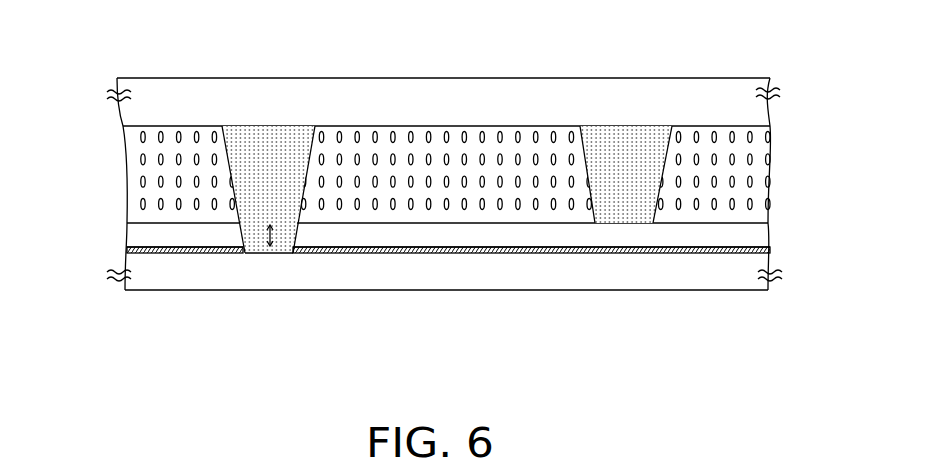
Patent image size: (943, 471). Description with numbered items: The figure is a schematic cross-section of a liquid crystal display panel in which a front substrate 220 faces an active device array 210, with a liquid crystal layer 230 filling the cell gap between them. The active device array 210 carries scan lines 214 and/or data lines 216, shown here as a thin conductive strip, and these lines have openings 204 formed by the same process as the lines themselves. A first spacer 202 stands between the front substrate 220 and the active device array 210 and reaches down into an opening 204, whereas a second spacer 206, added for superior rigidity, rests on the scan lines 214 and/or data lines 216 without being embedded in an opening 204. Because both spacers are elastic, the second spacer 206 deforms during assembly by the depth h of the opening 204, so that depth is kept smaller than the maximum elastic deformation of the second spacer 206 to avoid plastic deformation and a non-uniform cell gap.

The first spacer 202 is at (238, 143).
The opening 204 is at (243, 238).
The second spacer 206 is at (628, 143).
The active device array 210 is at (787, 223).
The scan line 214 is at (448, 301).
The data line 216 is at (188, 253).
The front substrate 220 is at (787, 78).
The liquid crystal layer 230 is at (135, 147).